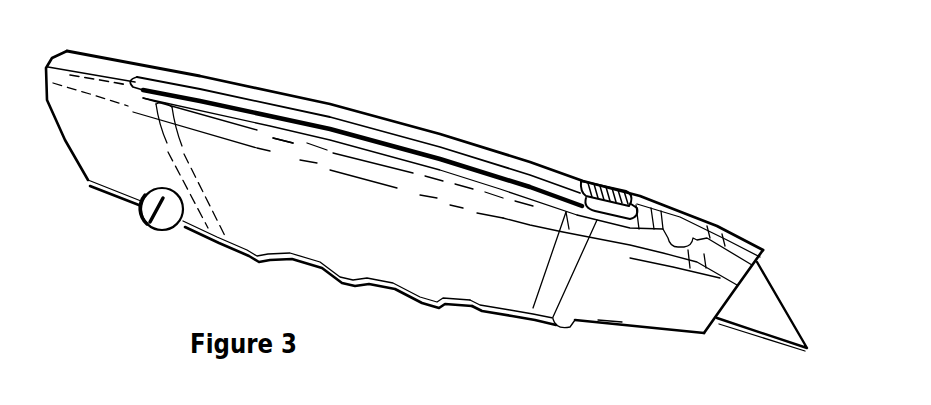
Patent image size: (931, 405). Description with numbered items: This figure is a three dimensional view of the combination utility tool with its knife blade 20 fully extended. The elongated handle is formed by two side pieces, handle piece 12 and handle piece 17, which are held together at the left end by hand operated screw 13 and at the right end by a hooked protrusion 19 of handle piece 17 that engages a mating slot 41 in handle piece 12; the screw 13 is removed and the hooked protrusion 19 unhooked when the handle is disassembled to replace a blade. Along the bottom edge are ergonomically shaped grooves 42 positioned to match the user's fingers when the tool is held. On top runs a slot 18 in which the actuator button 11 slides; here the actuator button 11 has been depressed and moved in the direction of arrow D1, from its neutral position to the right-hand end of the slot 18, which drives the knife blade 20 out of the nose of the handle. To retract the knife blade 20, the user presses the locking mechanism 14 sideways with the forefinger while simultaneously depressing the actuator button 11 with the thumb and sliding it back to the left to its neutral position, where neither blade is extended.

The actuator button 11 is at (609, 172).
The handle piece 12 is at (636, 314).
The hand operated screw 13 is at (165, 237).
The locking mechanism 14 is at (556, 311).
The handle piece 17 is at (457, 133).
The slot 18 is at (347, 132).
The hooked protrusion 19 is at (683, 230).
The knife blade 20 is at (748, 313).
The mating slot 41 is at (681, 253).
The ergonomically shaped grooves 42 is at (382, 291).
The direction arrow D1 is at (572, 154).